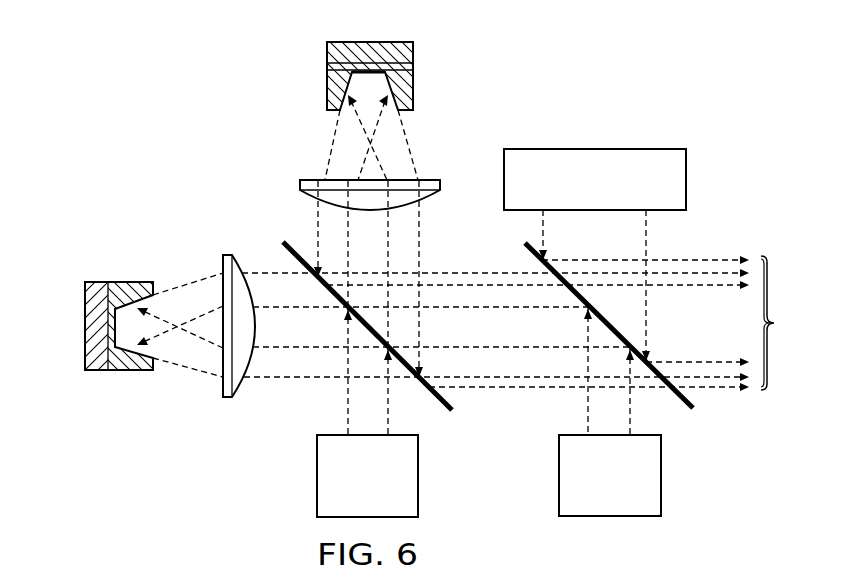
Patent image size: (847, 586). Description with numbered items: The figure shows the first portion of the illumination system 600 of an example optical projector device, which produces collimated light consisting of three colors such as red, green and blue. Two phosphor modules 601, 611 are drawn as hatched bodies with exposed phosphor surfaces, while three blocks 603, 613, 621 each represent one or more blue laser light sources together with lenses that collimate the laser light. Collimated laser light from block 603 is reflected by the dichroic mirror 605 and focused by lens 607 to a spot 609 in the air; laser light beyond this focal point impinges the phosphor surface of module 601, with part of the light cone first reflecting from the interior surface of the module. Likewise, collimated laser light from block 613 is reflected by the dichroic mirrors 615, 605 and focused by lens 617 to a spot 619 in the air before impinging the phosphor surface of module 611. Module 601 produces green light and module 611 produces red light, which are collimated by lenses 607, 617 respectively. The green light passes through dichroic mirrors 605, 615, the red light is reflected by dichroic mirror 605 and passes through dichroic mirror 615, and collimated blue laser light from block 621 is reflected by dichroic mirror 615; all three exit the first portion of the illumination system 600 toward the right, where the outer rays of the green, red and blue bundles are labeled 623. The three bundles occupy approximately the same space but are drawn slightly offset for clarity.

The illumination system 600 is at (142, 58).
The phosphor module 601 is at (85, 322).
The blue laser light source block 603 is at (317, 475).
The dichroic mirror 605 is at (451, 413).
The lens 607 is at (227, 398).
The spot 609 is at (183, 325).
The phosphor module 611 is at (327, 82).
The blue laser light source block 613 is at (661, 475).
The dichroic mirror 615 is at (693, 411).
The lens 617 is at (300, 183).
The spot 619 is at (368, 138).
The blue laser light source block 621 is at (686, 178).
The outer rays 623 is at (788, 323).